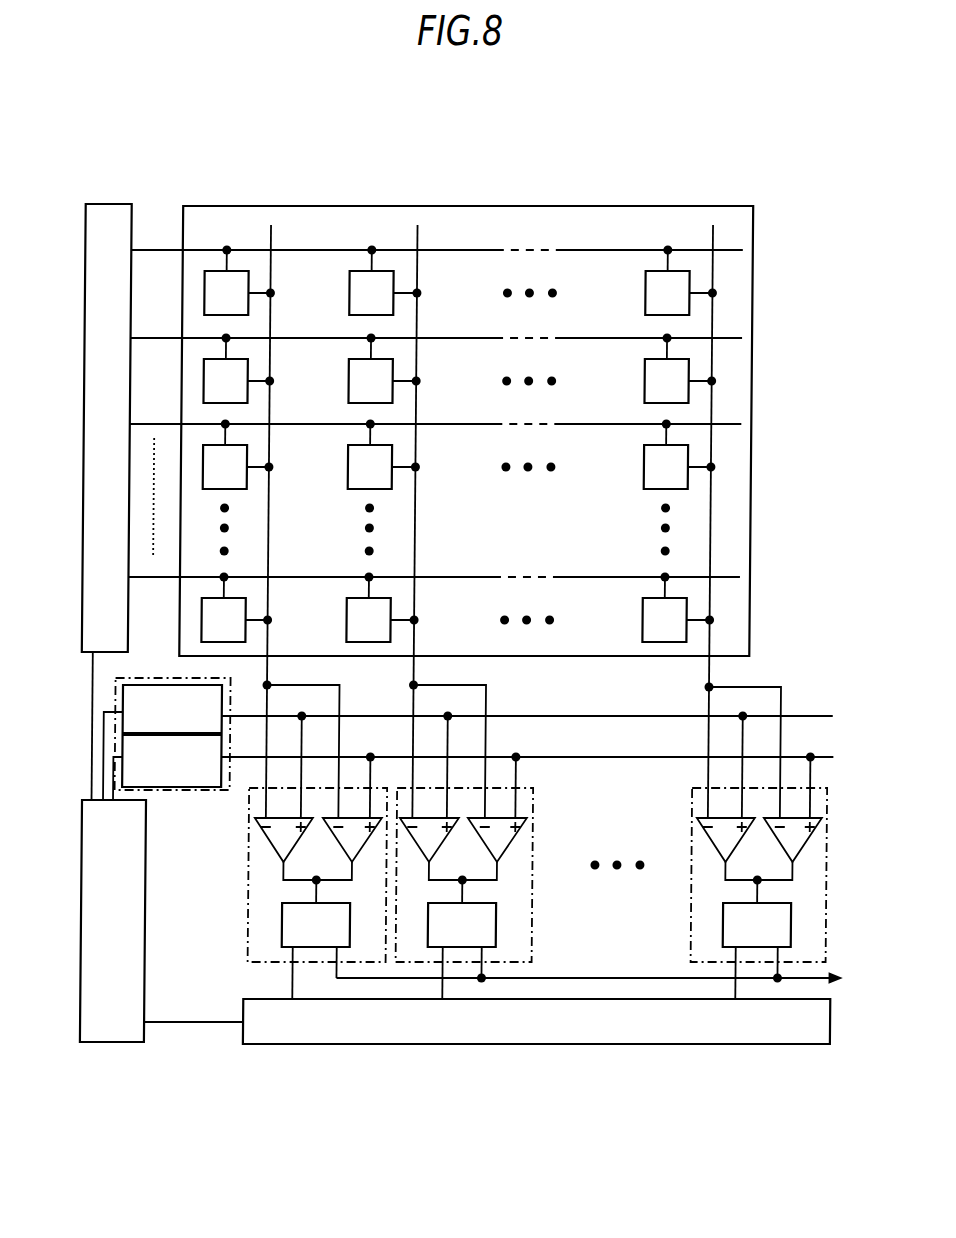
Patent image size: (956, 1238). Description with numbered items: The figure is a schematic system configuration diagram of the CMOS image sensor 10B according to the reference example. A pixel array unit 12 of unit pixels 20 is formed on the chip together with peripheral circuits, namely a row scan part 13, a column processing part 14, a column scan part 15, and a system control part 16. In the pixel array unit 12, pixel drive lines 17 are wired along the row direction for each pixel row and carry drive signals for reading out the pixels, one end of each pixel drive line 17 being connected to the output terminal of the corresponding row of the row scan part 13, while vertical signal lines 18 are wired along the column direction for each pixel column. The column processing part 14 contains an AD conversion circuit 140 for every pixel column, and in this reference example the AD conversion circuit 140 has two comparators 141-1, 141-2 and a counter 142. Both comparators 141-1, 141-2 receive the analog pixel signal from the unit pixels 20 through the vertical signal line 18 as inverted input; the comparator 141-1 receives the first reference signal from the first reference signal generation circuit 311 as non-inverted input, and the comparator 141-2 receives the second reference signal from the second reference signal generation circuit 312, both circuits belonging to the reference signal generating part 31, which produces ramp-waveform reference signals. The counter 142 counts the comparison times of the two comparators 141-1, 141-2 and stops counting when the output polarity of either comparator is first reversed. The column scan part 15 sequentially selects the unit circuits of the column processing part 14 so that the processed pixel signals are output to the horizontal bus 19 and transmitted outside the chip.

The CMOS image sensor 10B is at (593, 114).
The pixel array unit 12 is at (466, 410).
The row scan part 13 is at (107, 204).
The column processing part 14 is at (488, 893).
The column scan part 15 is at (547, 1044).
The system control part 16 is at (124, 1043).
The pixel drive line 17 is at (155, 248).
The vertical signal line 18 is at (420, 670).
The horizontal bus 19 is at (605, 976).
The unit pixel 20 is at (649, 490).
The reference signal generating part 31 is at (474, 737).
The reference signal 1 generation circuit 311 is at (149, 685).
The reference signal 2 generation circuit 312 is at (190, 787).
The AD conversion circuit 140 is at (494, 893).
The comparator 141-1 is at (450, 842).
The comparator 141-2 is at (534, 820).
The counter 142 is at (498, 907).